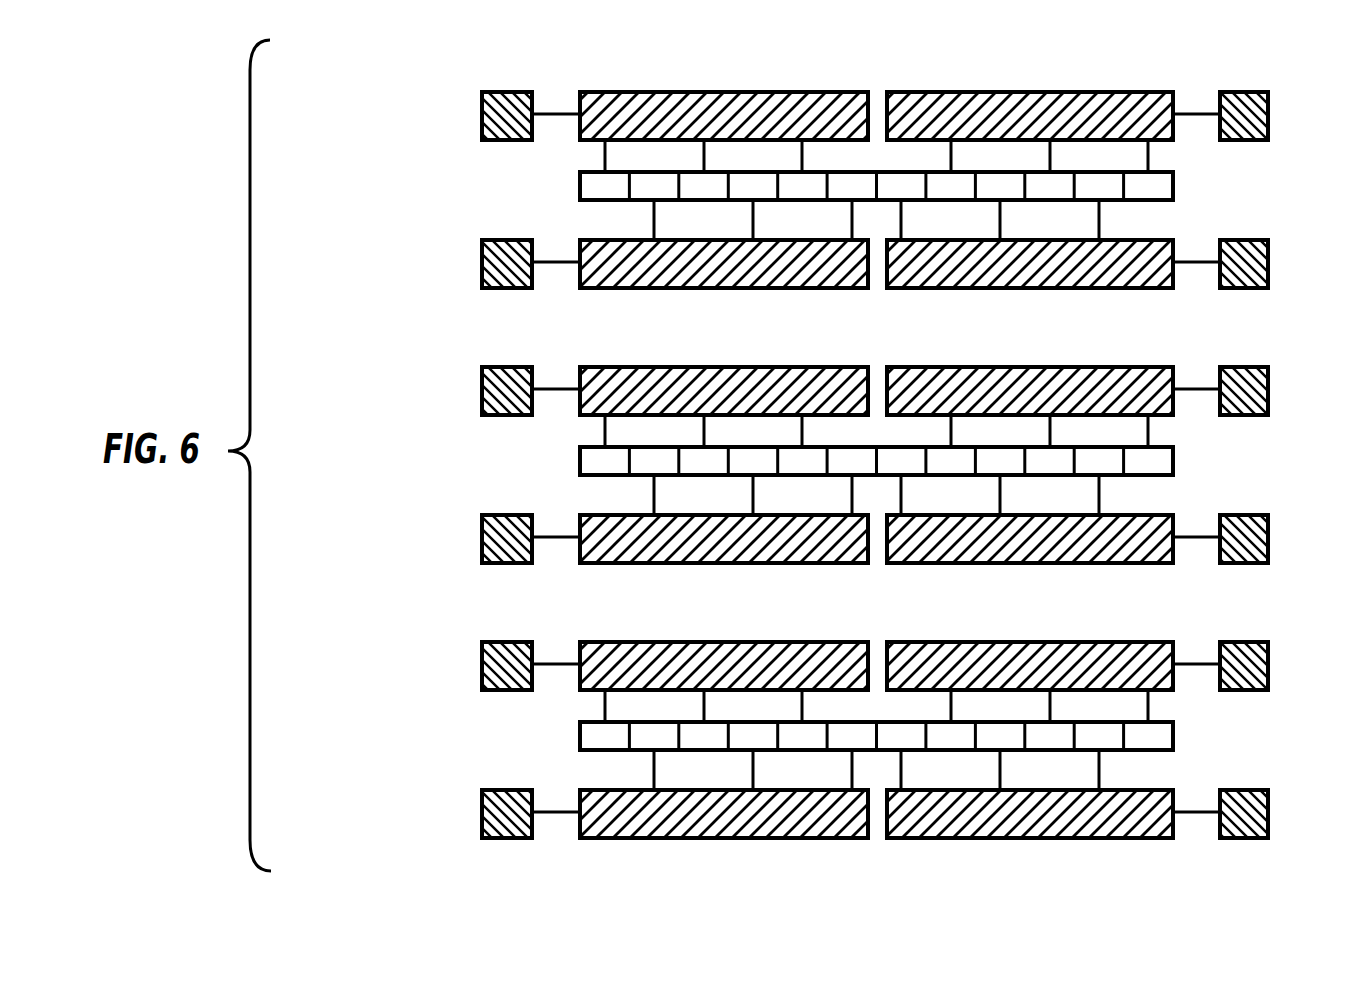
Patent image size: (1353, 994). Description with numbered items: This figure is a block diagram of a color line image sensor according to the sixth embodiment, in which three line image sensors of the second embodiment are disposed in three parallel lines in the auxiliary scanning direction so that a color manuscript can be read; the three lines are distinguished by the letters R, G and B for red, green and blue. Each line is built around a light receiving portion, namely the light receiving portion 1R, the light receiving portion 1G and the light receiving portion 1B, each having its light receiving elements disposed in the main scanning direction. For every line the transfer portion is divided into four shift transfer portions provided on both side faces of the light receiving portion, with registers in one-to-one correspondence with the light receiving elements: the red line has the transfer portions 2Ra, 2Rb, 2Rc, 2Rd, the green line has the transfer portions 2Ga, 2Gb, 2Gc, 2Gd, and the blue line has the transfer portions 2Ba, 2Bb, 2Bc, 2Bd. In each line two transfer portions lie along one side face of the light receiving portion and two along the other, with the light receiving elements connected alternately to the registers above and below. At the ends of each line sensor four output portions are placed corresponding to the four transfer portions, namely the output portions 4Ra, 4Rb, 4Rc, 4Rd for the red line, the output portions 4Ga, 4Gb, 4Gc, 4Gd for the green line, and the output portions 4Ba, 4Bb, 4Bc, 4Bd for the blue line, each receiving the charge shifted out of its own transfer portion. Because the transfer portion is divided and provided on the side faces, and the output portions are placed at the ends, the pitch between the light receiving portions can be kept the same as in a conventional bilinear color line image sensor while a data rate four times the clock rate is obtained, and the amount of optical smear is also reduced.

The light receiving portion 1R is at (577, 188).
The light receiving portion 1G is at (725, 455).
The light receiving portion 1B is at (725, 730).
The transfer portion 2Ra is at (608, 92).
The transfer portion 2Rb is at (912, 92).
The transfer portion 2Rc is at (608, 288).
The transfer portion 2Rd is at (912, 288).
The transfer portion 2Ga is at (708, 387).
The transfer portion 2Gb is at (1053, 387).
The transfer portion 2Gc is at (708, 537).
The transfer portion 2Gd is at (1053, 537).
The transfer portion 2Ba is at (708, 662).
The transfer portion 2Bb is at (1053, 662).
The transfer portion 2Bc is at (708, 812).
The transfer portion 2Bd is at (1053, 812).
The output portion 4Ra is at (482, 105).
The output portion 4Rb is at (1268, 108).
The output portion 4Rc is at (482, 253).
The output portion 4Rd is at (1268, 256).
The output portion 4Ga is at (492, 379).
The output portion 4Gb is at (1266, 380).
The output portion 4Gc is at (492, 526).
The output portion 4Gd is at (1258, 527).
The output portion 4Ba is at (492, 654).
The output portion 4Bb is at (1266, 655).
The output portion 4Bc is at (492, 801).
The output portion 4Bd is at (1258, 802).